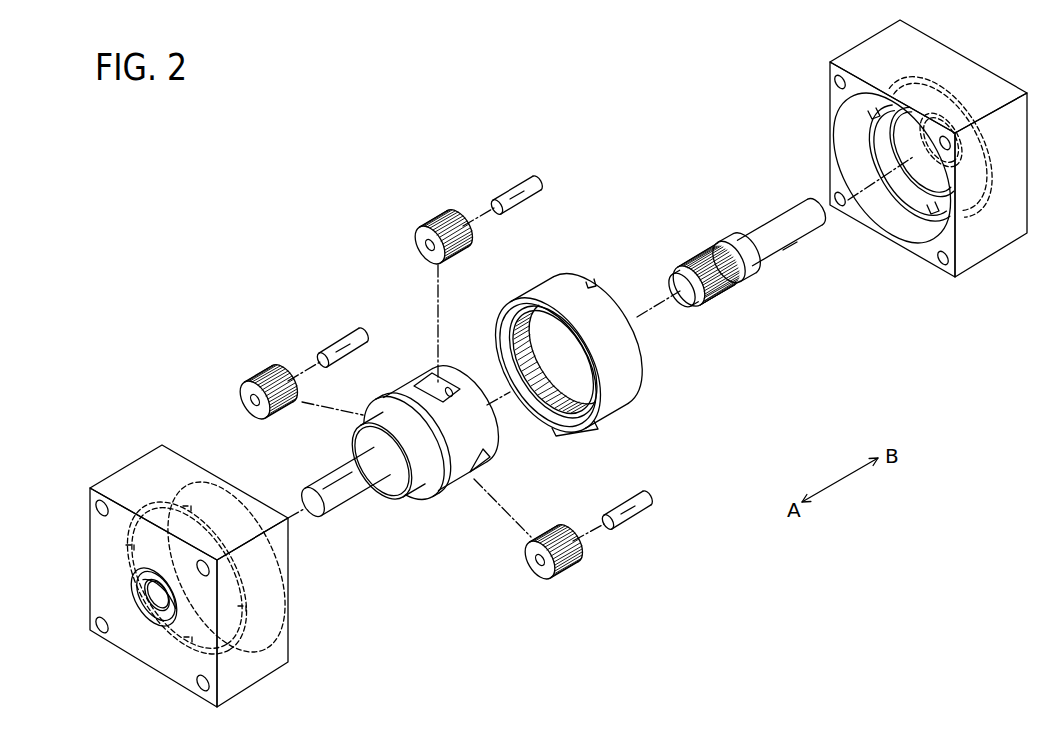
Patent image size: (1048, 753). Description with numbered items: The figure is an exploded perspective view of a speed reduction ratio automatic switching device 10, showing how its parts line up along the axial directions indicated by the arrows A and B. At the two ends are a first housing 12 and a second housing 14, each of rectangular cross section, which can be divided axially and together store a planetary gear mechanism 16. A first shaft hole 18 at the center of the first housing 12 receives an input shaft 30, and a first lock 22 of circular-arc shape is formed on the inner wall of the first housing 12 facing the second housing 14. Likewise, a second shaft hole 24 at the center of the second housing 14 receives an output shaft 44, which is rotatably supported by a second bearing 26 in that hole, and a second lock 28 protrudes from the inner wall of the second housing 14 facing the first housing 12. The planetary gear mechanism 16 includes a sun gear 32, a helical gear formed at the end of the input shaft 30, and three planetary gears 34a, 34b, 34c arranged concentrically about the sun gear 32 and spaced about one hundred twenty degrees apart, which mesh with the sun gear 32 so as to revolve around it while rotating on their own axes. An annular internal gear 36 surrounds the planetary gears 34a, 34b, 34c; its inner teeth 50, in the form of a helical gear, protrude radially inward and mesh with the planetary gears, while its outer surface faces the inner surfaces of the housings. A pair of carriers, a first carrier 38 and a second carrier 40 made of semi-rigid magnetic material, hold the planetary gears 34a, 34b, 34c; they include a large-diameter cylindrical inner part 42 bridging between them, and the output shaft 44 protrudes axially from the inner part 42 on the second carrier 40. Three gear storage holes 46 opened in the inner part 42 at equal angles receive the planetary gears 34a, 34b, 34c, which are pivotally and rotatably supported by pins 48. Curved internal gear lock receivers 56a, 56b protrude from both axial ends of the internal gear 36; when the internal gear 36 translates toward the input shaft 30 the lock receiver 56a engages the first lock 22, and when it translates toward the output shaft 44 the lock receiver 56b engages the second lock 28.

The speed reduction ratio automatic switching device 10 is at (342, 128).
The first housing 12 is at (852, 40).
The second housing 14 is at (118, 460).
The planetary gear mechanism 16 is at (373, 298).
The first shaft hole 18 is at (955, 100).
The first lock 22 is at (931, 216).
The second shaft hole 24 is at (143, 612).
The second bearing 26 is at (130, 588).
The second lock 28 is at (238, 648).
The input shaft 30 is at (789, 246).
The sun gear 32 is at (717, 300).
The planetary gear 34a is at (430, 222).
The planetary gear 34b is at (530, 570).
The planetary gear 34c is at (262, 372).
The internal gear 36 is at (623, 392).
The first carrier 38 is at (487, 438).
The second carrier 40 is at (395, 492).
The inner part 42 is at (403, 390).
The output shaft 44 is at (323, 485).
The gear storage holes 46 is at (439, 373).
The pins 48 is at (517, 188).
The inner teeth 50 is at (523, 322).
The internal gear lock receiver 56a is at (592, 277).
The internal gear lock receiver 56b is at (571, 434).